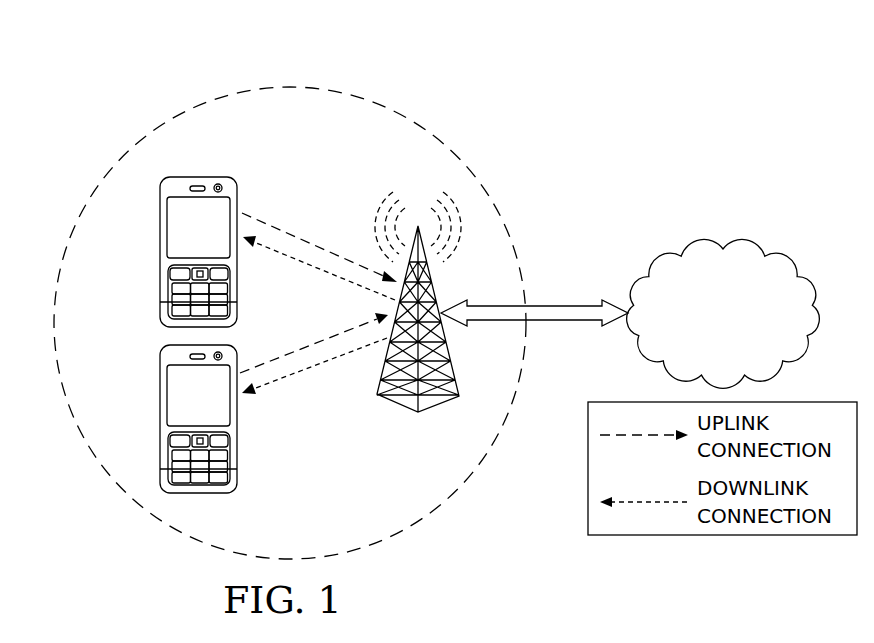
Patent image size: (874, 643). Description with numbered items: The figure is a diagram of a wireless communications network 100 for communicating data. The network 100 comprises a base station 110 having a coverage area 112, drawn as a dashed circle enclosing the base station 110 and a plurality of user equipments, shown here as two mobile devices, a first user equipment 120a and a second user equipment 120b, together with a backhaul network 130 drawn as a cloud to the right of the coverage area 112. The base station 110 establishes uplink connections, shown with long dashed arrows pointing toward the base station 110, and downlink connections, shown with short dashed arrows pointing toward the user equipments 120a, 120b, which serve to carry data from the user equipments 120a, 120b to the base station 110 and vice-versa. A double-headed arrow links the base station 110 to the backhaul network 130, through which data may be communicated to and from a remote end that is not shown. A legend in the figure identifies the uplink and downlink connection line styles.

The network 100 is at (636, 136).
The base station 110 is at (438, 402).
The coverage area 112 is at (158, 107).
The user equipment 120a is at (160, 252).
The user equipment 120b is at (160, 412).
The backhaul network 130 is at (725, 248).